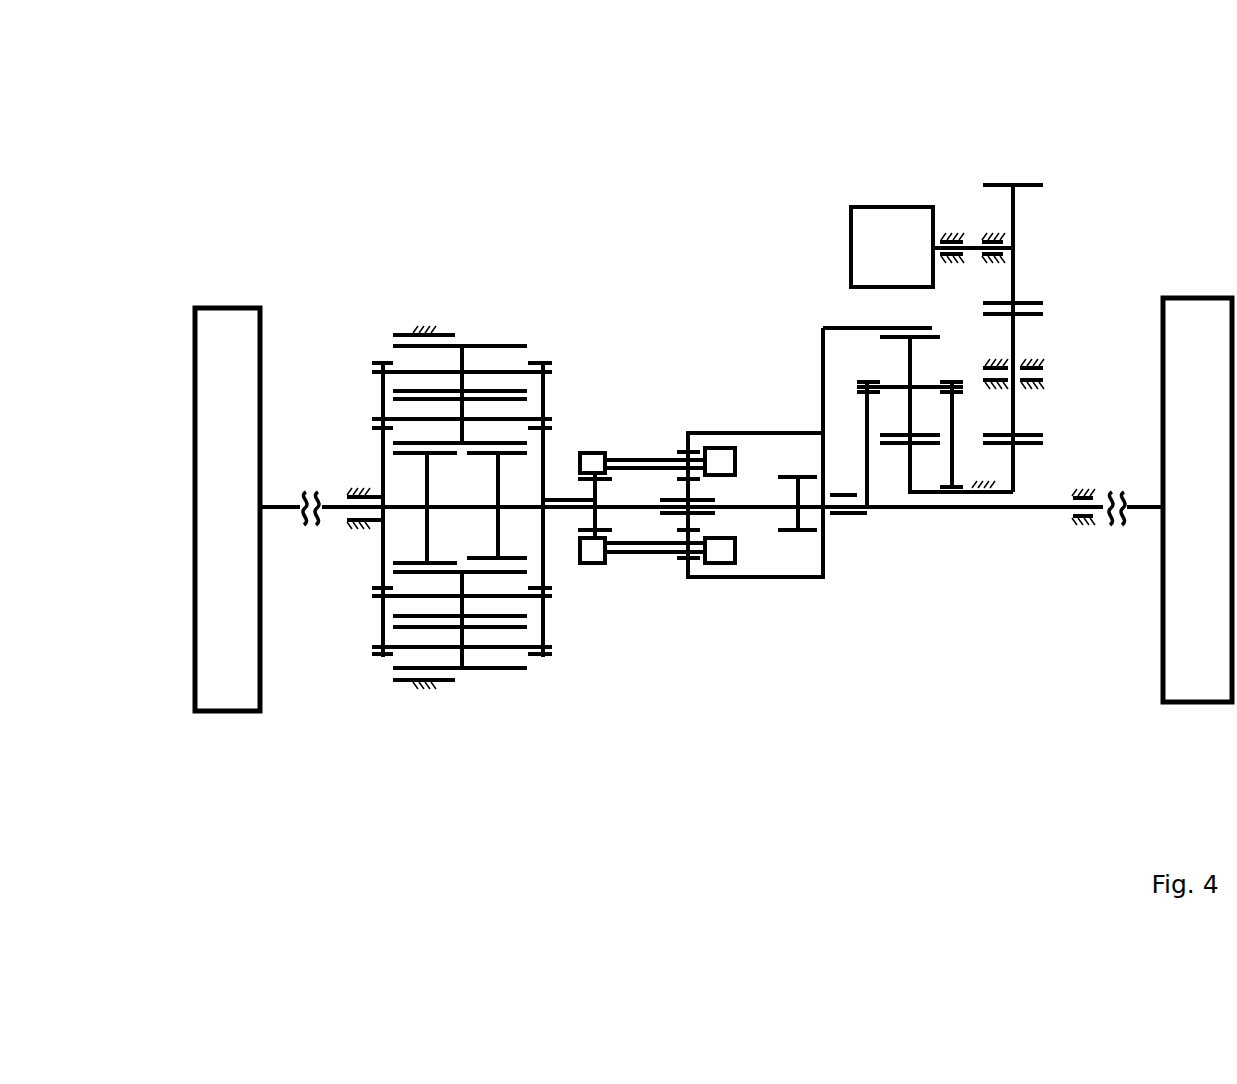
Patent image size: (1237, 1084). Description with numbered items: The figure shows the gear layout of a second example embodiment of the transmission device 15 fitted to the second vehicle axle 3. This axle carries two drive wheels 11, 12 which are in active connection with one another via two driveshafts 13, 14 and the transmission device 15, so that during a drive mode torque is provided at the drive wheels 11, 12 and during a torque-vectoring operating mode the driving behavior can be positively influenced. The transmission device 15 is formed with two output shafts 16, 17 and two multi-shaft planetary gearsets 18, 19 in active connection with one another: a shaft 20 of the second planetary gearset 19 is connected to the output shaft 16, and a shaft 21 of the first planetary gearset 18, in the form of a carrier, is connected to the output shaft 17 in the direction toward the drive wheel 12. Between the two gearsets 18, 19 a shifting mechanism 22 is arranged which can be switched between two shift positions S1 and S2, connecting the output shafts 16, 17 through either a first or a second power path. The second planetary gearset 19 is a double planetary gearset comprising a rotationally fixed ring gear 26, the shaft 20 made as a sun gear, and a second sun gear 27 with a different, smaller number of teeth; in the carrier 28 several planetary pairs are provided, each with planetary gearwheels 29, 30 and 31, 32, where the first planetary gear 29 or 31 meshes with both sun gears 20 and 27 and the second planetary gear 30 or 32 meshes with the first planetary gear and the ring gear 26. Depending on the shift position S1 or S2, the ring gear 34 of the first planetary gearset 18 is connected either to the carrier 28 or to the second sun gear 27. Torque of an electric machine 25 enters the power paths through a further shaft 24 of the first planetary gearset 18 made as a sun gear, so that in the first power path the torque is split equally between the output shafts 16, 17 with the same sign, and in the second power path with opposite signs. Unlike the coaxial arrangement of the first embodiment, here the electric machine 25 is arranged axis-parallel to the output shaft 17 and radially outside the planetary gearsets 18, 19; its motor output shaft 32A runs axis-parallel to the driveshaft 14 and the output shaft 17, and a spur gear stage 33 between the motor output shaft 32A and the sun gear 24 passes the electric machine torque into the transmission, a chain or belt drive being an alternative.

The second vehicle axle 3 is at (814, 640).
The drive wheel 11 is at (218, 373).
The drive wheel 12 is at (1212, 323).
The driveshaft 13 is at (278, 505).
The driveshaft 14 is at (1148, 500).
The transmission device 15 is at (452, 214).
The output shaft 16 is at (333, 505).
The output shaft 17 is at (1047, 505).
The first planetary gearset 18 is at (828, 296).
The second planetary gearset 19 is at (500, 318).
The shaft 20 is at (383, 527).
The shaft 21 is at (870, 467).
The shifting mechanism 22 is at (645, 430).
The further shaft 24 is at (1020, 468).
The electric machine 25 is at (896, 198).
The ring gear 26 is at (403, 333).
The second sun gear 27 is at (502, 535).
The carrier 28 is at (377, 533).
The first planetary gear 29 is at (520, 387).
The second planetary gear 30 is at (513, 343).
The first planetary gear 31 is at (423, 620).
The second planetary gear 32 is at (517, 670).
The motor output shaft 32A is at (973, 245).
The spur gear stage 33 is at (1062, 292).
The ring gear 34 is at (840, 327).
The shift position S1 is at (592, 428).
The shift position S2 is at (796, 452).